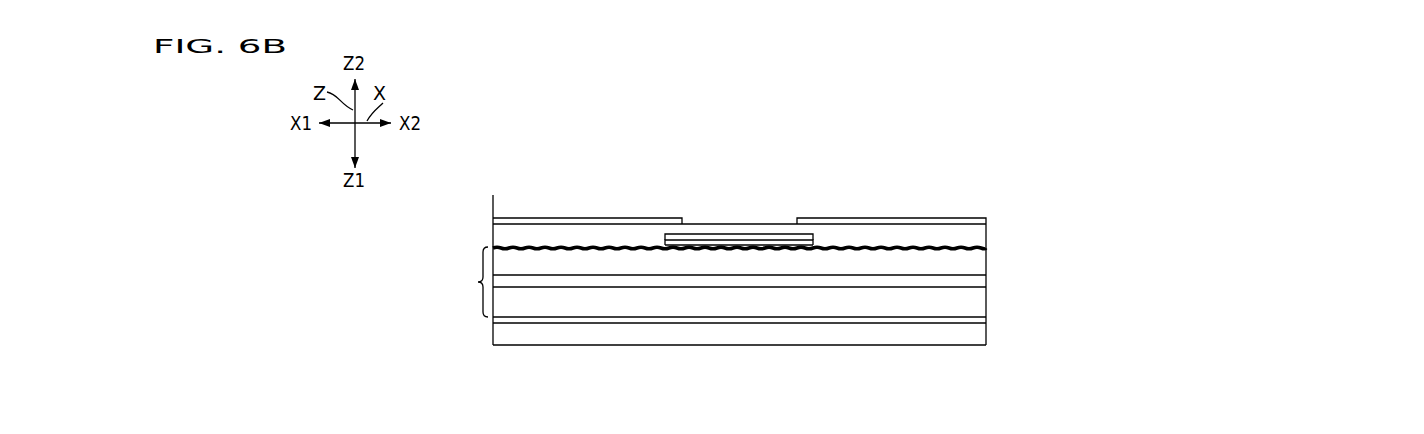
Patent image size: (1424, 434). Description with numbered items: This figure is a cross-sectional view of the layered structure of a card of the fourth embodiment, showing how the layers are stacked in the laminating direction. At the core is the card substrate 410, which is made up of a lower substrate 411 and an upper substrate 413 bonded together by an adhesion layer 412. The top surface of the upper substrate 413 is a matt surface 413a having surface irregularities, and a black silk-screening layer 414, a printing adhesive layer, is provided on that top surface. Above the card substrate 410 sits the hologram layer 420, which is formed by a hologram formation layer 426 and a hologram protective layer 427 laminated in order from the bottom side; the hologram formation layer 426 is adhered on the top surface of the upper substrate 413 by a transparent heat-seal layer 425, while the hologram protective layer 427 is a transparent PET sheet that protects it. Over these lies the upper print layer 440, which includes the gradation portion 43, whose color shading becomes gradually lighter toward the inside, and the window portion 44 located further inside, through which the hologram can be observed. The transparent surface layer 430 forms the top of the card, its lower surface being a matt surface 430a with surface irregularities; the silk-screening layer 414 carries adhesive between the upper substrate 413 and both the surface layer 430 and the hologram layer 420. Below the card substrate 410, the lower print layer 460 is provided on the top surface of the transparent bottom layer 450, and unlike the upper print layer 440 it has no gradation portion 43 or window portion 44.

The silk-screening layer 414 is at (585, 245).
The window portion 44 is at (698, 222).
The gradation portion 43 is at (660, 217).
The hologram layer 420 is at (908, 178).
The hologram protective layer 427 is at (763, 238).
The hologram formation layer 426 is at (775, 243).
The heat-seal layer 425 is at (798, 245).
The upper print layer 440 is at (977, 221).
The surface layer 430 is at (977, 242).
The matt surface 430a is at (508, 246).
The upper substrate 413 is at (977, 262).
The matt surface 413a is at (510, 252).
The adhesion layer 412 is at (977, 282).
The lower substrate 411 is at (977, 304).
The lower print layer 460 is at (977, 322).
The bottom layer 450 is at (977, 335).
The card substrate 410 is at (425, 282).